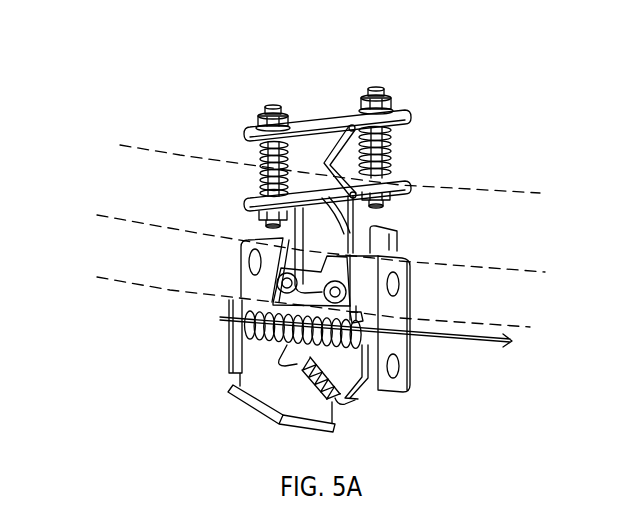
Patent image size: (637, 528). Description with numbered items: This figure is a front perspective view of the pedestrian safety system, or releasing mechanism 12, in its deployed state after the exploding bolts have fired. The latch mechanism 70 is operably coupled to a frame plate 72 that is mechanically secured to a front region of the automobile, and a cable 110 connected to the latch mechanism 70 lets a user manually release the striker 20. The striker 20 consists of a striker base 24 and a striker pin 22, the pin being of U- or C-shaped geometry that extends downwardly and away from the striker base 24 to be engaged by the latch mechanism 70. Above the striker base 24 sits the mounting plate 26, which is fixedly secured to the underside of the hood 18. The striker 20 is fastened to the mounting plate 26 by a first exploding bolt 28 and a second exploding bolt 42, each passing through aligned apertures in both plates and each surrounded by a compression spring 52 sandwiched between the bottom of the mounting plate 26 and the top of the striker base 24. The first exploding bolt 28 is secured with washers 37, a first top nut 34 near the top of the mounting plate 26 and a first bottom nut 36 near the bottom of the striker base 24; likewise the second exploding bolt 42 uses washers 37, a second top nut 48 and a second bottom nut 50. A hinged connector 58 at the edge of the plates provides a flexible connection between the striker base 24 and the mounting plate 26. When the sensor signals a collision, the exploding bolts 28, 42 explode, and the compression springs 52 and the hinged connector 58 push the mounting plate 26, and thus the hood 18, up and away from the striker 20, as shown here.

The releasing mechanism 12 is at (136, 78).
The hood 18 is at (155, 148).
The striker 20 is at (236, 197).
The striker pin 22 is at (293, 257).
The striker base 24 is at (405, 177).
The mounting plate 26 is at (405, 112).
The first exploding bolt 28 is at (273, 105).
The first top nut 34 is at (256, 113).
The first bottom nut 36 is at (262, 222).
The washers 37 is at (257, 123).
The second exploding bolt 42 is at (388, 96).
The second top nut 48 is at (366, 90).
The second bottom nut 50 is at (388, 191).
The compression spring 52 is at (388, 150).
The hinged connector 58 is at (329, 142).
The latch mechanism 70 is at (350, 213).
The frame plate 72 is at (392, 305).
The cable 110 is at (450, 330).